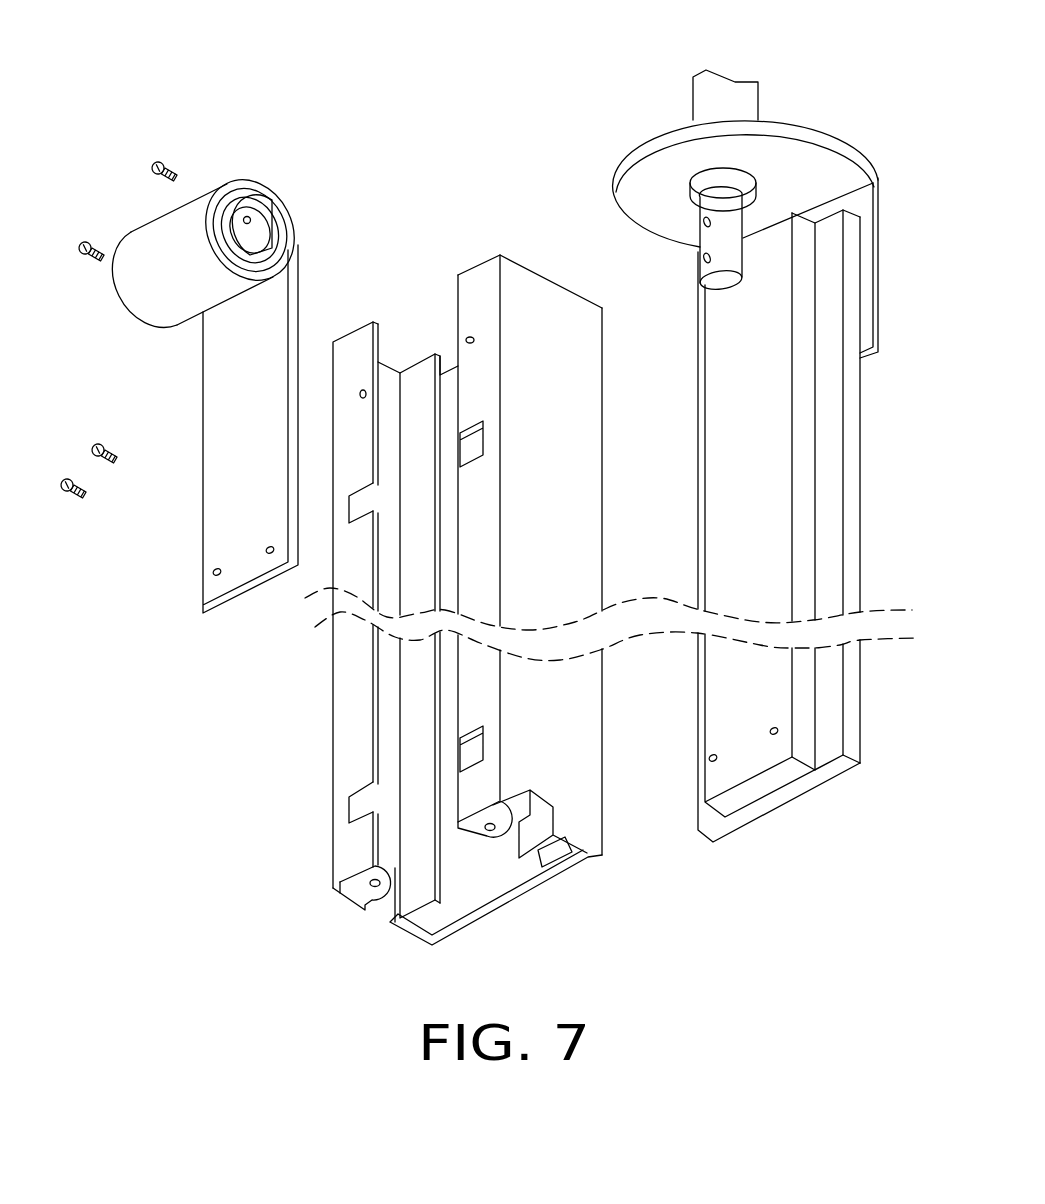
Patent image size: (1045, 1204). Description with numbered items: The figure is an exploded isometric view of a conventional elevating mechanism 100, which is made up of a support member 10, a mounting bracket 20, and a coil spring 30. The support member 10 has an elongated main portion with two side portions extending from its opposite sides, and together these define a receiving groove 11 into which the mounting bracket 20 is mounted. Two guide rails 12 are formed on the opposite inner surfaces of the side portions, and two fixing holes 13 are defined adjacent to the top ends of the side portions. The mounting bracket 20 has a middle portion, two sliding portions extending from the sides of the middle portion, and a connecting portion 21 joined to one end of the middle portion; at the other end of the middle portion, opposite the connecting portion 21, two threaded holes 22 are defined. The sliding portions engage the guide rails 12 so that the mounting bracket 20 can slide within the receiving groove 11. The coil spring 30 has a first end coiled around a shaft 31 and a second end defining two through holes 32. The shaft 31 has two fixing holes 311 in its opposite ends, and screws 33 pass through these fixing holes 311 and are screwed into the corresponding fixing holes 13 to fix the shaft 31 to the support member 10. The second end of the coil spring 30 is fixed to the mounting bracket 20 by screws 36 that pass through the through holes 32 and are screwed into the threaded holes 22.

The elevating mechanism 100 is at (505, 68).
The support member 10 is at (350, 757).
The receiving groove 11 is at (390, 722).
The guide rails 12 is at (408, 552).
The fixing holes 13 is at (363, 394).
The mounting bracket 20 is at (828, 417).
The connecting portion 21 is at (793, 158).
The threaded holes 22 is at (774, 731).
The coil spring 30 is at (160, 280).
The shaft 31 is at (268, 215).
The fixing holes 311 is at (248, 213).
The through holes 32 is at (270, 550).
The screws 33 is at (85, 242).
The screws 36 is at (67, 480).